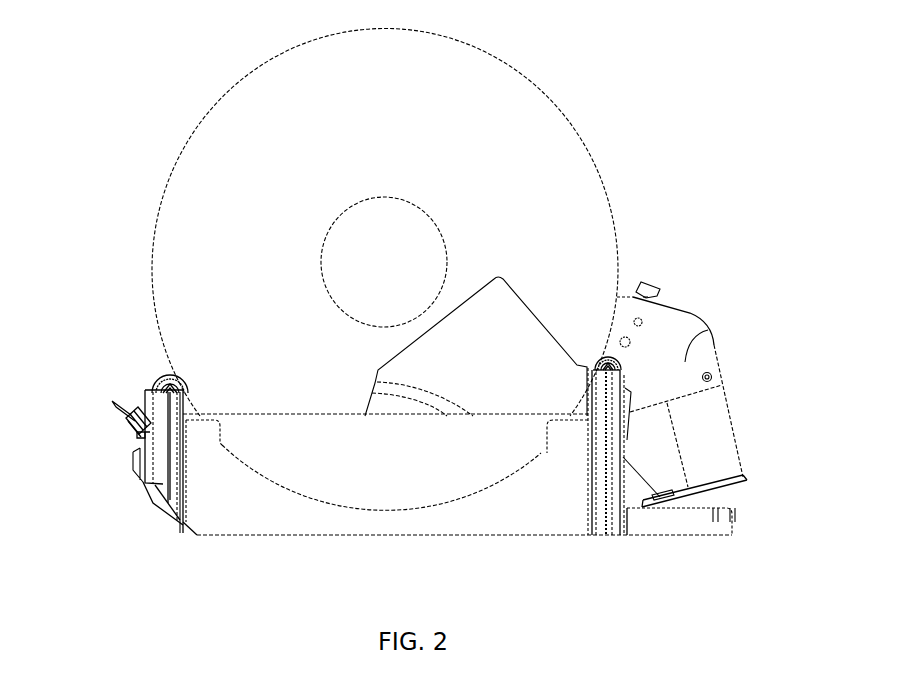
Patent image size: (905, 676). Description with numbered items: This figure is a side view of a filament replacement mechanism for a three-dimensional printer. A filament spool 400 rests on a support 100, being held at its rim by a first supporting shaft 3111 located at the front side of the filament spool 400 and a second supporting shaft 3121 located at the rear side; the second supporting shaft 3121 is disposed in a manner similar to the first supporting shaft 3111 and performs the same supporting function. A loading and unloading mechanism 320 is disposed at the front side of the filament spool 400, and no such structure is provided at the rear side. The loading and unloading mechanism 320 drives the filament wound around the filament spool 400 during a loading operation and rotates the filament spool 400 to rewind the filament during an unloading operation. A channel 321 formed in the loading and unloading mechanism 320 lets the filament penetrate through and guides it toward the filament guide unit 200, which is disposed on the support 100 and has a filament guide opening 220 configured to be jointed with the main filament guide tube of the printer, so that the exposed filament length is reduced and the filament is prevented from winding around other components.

The support 100 is at (510, 520).
The filament guide unit 200 is at (137, 470).
The filament guide opening 220 is at (107, 405).
The second supporting shaft 3121 is at (157, 378).
The filament spool 400 is at (563, 208).
The loading and unloading mechanism 320 is at (710, 330).
The channel 321 is at (617, 297).
The first supporting shaft 3111 is at (620, 355).